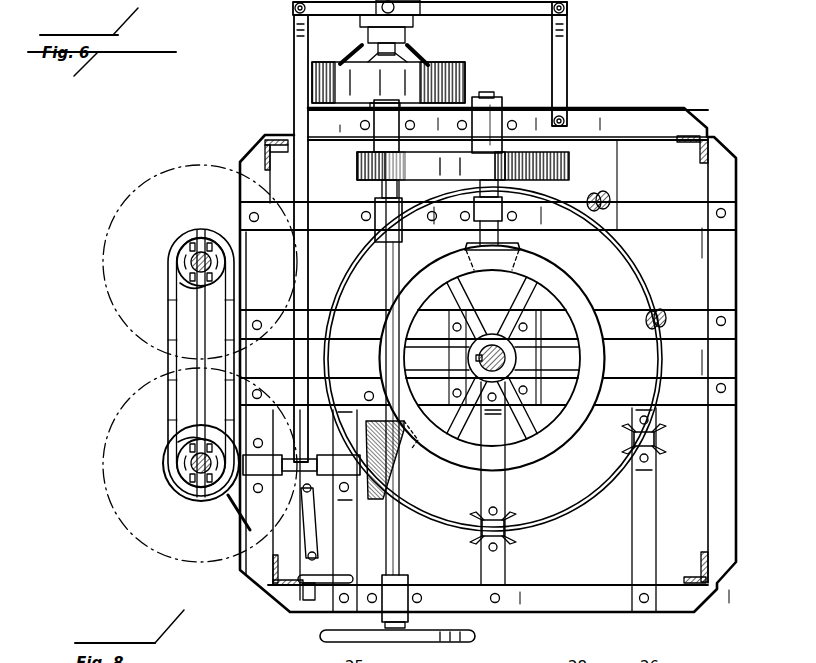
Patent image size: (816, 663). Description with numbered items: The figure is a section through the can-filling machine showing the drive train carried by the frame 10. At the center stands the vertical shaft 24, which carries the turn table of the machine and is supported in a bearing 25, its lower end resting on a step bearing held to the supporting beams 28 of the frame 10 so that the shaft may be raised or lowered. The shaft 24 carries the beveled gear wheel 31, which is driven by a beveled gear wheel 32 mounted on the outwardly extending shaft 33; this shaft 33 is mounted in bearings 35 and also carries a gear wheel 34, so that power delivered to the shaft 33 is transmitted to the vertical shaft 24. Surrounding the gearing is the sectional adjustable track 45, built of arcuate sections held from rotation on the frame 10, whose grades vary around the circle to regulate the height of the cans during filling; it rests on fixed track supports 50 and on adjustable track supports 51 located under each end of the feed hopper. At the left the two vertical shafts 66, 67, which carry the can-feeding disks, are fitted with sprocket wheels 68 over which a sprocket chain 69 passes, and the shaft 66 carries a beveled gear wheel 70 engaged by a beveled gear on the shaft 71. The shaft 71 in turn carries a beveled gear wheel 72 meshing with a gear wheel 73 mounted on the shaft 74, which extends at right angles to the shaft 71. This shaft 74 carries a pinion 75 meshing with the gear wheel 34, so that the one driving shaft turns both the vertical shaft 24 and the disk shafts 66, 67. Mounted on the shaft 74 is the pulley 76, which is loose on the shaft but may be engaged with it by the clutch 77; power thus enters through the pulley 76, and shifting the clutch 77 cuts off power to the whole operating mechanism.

The frame 10 is at (744, 477).
The vertical shaft 24 is at (476, 365).
The bearing 25 is at (493, 318).
The supporting beams 28 is at (577, 585).
The beveled gear wheel 31 is at (571, 286).
The beveled gear wheel 32 is at (522, 246).
The outwardly extending shaft 33 is at (492, 92).
The gear wheel 34 is at (572, 166).
The bearings 35 is at (562, 110).
The sectional adjustable track 45 is at (640, 280).
The track supports 50 is at (592, 200).
The adjustable track supports 51 is at (505, 522).
The vertical shaft 66 is at (194, 472).
The vertical shaft 67 is at (192, 262).
The sprocket wheels 68 is at (183, 285).
The sprocket chain 69 is at (168, 360).
The beveled gear wheel 70 is at (197, 502).
The shaft 71 is at (301, 505).
The beveled gear wheel 72 is at (357, 511).
The gear wheel 73 is at (410, 450).
The shaft 74 is at (400, 553).
The pinion 75 is at (360, 165).
The pulley 76 is at (330, 79).
The clutch 77 is at (416, 58).